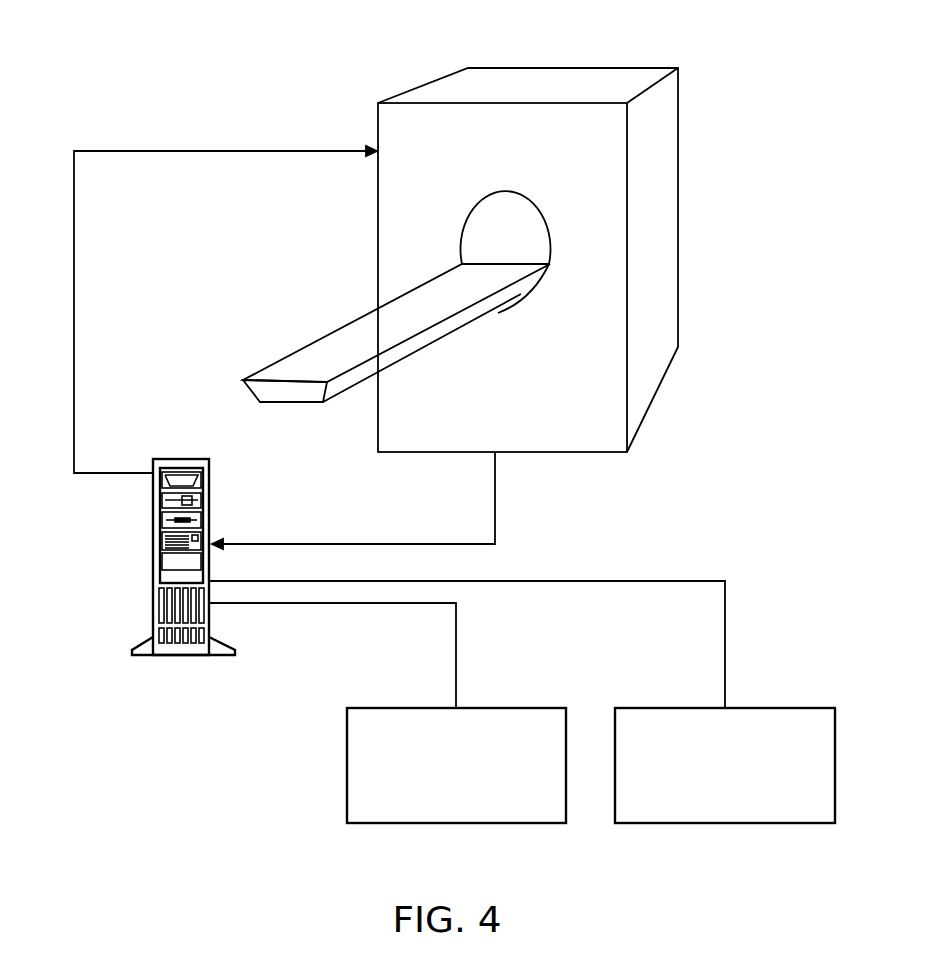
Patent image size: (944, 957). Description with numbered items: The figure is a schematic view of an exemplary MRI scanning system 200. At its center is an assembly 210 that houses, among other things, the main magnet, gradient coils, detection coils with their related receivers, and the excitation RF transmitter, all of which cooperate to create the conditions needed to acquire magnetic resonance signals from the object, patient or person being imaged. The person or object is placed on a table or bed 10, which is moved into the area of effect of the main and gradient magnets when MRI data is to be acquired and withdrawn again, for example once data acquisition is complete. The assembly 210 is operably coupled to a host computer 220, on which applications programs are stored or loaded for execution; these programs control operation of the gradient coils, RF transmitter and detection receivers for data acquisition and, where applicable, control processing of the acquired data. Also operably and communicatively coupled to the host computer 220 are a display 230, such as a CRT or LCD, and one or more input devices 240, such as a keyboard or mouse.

The scanning system 200 is at (760, 30).
The assembly 210 is at (680, 217).
The bed 10 is at (433, 314).
The host computer 220 is at (152, 555).
The display 230 is at (435, 813).
The input devices 240 is at (712, 813).